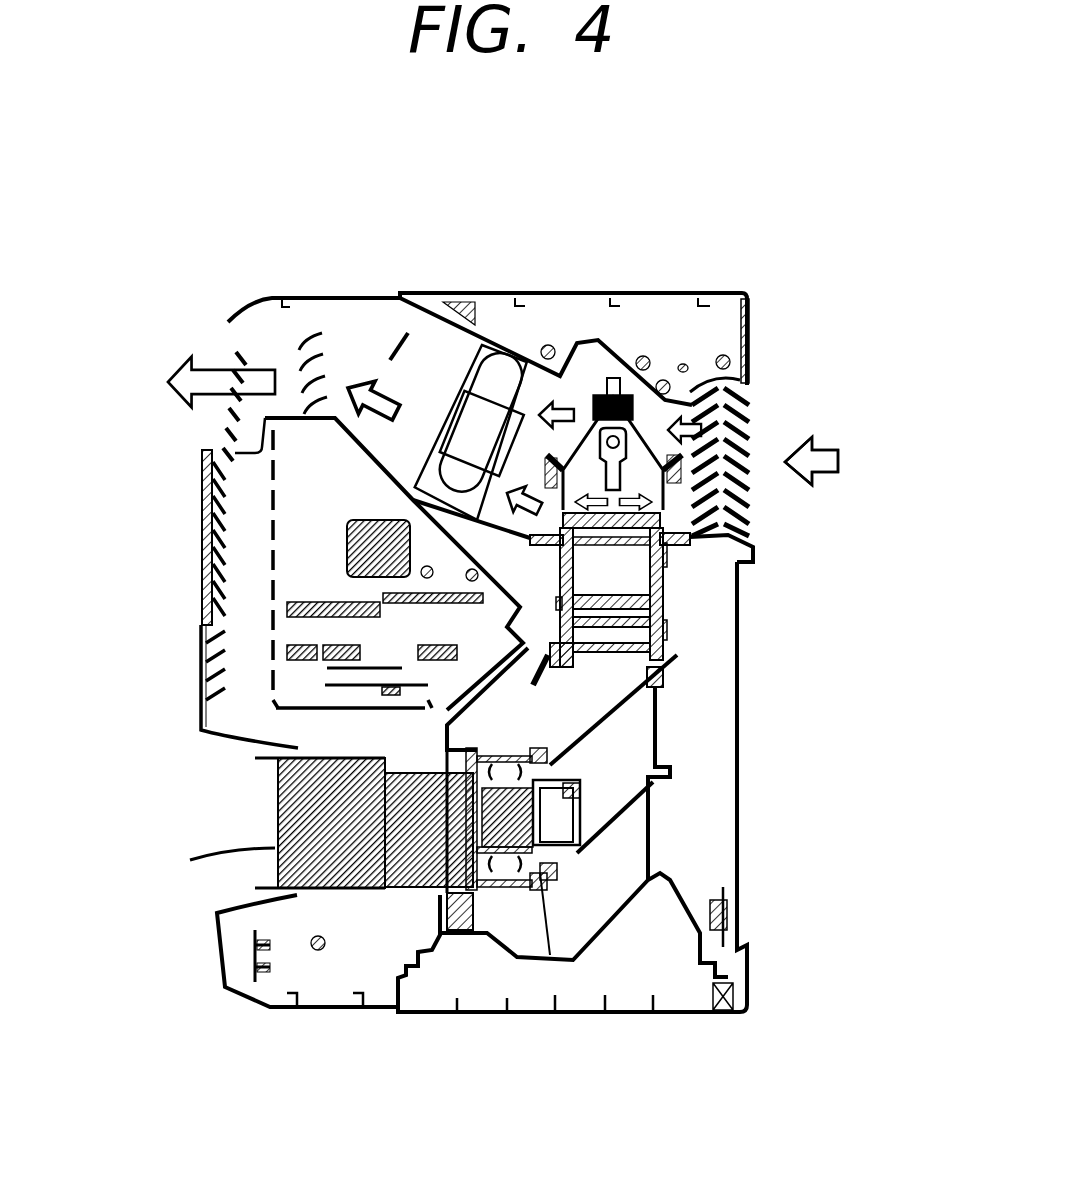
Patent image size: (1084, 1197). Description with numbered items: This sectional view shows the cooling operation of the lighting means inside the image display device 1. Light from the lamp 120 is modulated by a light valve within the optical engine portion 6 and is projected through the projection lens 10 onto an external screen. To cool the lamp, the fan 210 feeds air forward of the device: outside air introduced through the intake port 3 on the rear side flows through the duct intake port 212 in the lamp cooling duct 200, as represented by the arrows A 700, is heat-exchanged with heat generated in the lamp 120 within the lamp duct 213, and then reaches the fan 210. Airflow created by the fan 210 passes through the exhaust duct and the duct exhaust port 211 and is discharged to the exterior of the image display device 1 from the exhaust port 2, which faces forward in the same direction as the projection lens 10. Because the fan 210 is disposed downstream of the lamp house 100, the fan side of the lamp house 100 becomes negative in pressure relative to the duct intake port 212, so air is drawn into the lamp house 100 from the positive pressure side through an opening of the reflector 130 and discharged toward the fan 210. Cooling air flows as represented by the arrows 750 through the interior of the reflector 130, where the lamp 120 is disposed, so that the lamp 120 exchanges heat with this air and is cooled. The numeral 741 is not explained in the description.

The image display device 1 is at (697, 865).
The exhaust port 2 is at (198, 347).
The intake port 3 is at (747, 422).
The optical engine portion 6 is at (560, 722).
The projection lens 10 is at (280, 855).
The lamp house 100 is at (658, 430).
The lamp 120 is at (612, 385).
The reflector 130 is at (746, 360).
The lamp cooling duct 200 is at (397, 443).
The fan 210 is at (503, 383).
The duct exhaust port 211 is at (227, 423).
The duct intake port 212 is at (728, 407).
The lamp duct 213 is at (667, 395).
The arrows A 700 is at (362, 387).
The duct 741 is at (650, 543).
The arrows 750 is at (596, 505).